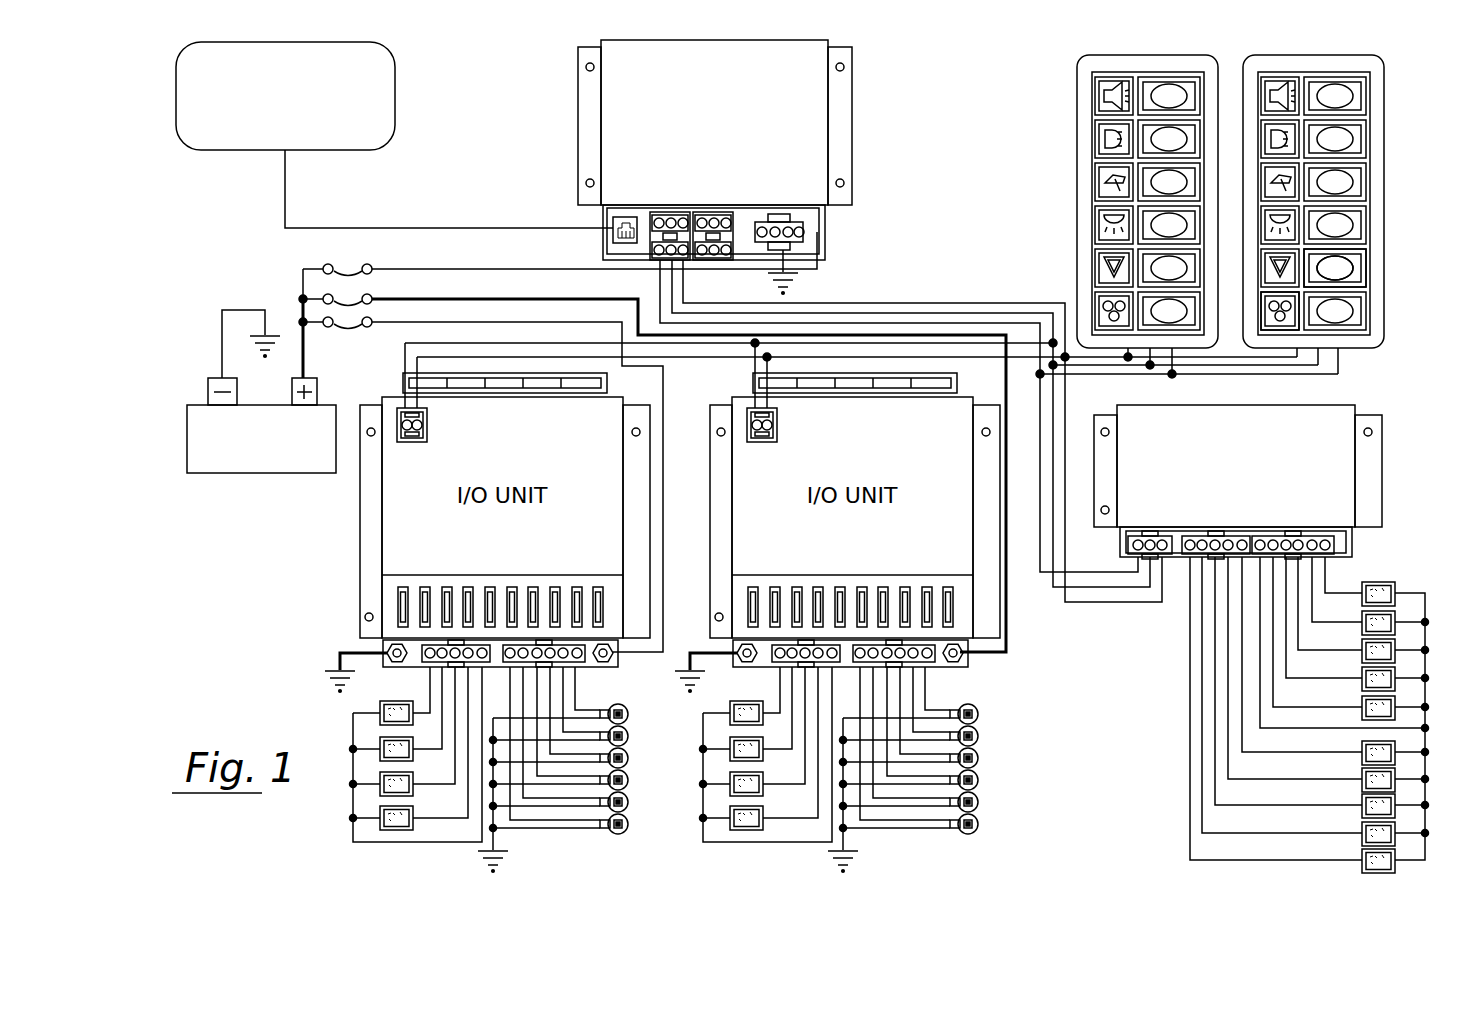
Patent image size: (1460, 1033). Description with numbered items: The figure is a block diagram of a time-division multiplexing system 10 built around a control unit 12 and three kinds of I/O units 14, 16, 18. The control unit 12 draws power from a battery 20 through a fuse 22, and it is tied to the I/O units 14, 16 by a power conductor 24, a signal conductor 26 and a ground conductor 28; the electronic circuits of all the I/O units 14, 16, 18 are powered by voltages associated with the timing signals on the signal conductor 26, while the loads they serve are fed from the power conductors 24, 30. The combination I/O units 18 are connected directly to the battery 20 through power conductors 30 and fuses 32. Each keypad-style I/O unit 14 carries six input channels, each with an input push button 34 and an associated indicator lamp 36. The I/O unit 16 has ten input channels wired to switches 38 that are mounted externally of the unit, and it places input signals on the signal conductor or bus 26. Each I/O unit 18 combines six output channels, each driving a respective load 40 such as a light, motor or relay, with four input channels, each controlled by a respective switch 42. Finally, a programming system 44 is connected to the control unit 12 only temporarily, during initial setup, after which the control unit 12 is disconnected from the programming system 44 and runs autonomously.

The time-division multiplexing system 10 is at (708, 390).
The control unit 12 is at (818, 115).
The I/O unit 14 is at (1077, 105).
The I/O unit 16 is at (1343, 412).
The I/O unit 18 is at (393, 542).
The battery 20 is at (262, 475).
The fuse 22 is at (345, 268).
The power conductor 24 is at (1003, 322).
The signal conductor 26 is at (874, 304).
The ground conductor 28 is at (944, 313).
The power conductor 30 is at (537, 322).
The fuse 32 is at (378, 296).
The input push button 34 is at (1363, 258).
The indicator lamp 36 is at (1278, 318).
The switch 38 is at (1380, 583).
The load 40 is at (622, 843).
The switch 42 is at (385, 836).
The programming system 44 is at (396, 90).